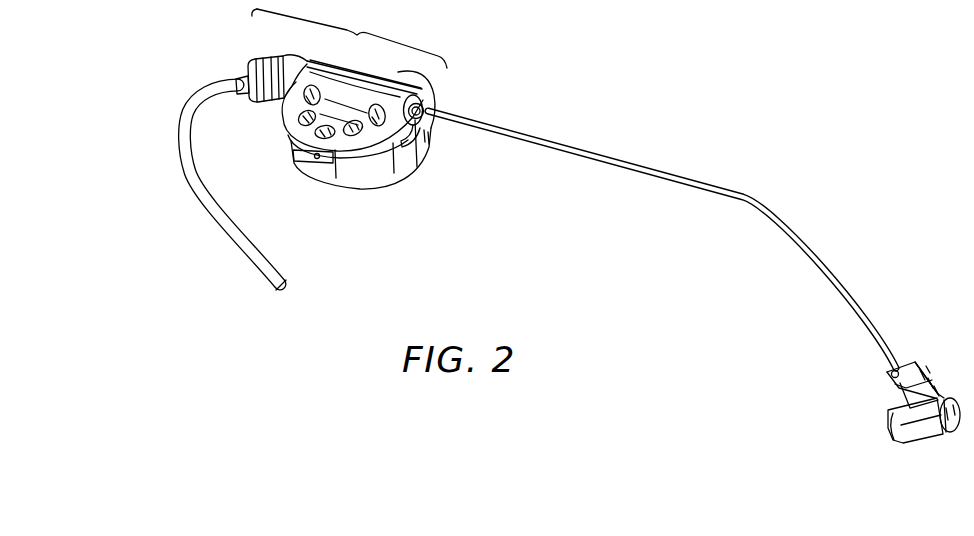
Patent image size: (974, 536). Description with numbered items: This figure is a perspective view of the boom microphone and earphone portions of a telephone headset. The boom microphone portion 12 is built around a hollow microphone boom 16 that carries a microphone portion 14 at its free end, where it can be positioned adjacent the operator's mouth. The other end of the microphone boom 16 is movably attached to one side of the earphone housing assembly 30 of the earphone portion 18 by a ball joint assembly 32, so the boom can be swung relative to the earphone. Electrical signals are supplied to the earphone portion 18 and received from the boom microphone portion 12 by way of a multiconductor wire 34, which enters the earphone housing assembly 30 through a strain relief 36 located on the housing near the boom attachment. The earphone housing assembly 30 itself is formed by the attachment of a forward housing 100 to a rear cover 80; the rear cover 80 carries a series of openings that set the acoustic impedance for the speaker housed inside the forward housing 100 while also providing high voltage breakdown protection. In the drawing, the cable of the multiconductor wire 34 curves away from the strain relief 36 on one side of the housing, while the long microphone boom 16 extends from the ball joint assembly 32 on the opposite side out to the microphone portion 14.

The boom microphone portion 12 is at (744, 193).
The microphone portion 14 is at (895, 435).
The microphone boom 16 is at (781, 238).
The earphone portion 18 is at (349, 37).
The earphone housing assembly 30 is at (389, 158).
The ball joint assembly 32 is at (427, 102).
The multiconductor wire 34 is at (209, 198).
The strain relief 36 is at (264, 103).
The rear cover 80 is at (409, 66).
The forward housing 100 is at (423, 171).